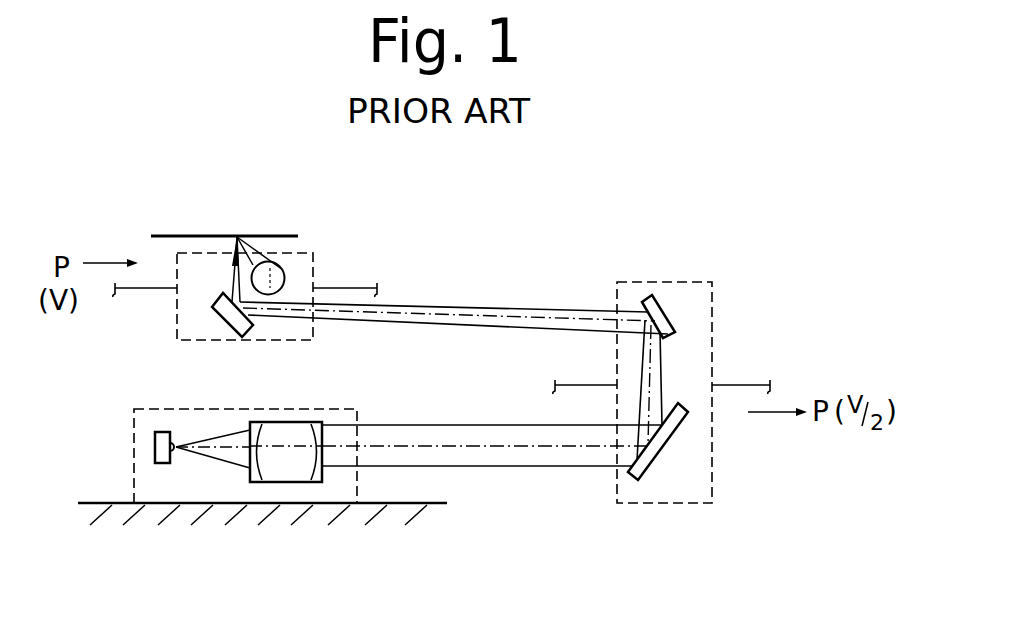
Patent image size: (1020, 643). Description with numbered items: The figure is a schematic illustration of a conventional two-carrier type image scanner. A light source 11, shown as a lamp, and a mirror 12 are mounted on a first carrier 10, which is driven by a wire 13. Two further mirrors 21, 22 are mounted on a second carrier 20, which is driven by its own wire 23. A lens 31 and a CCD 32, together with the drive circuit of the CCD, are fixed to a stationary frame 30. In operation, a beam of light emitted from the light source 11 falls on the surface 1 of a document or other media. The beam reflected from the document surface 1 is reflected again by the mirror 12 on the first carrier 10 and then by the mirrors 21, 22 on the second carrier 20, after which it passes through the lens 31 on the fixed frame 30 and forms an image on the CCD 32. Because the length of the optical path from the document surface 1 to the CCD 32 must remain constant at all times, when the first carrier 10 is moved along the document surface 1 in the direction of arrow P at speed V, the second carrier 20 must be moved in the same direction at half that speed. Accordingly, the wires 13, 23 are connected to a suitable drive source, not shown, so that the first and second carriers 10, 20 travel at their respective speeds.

The document surface 1 is at (175, 236).
The first carrier 10 is at (317, 268).
The light source 11 is at (283, 269).
The mirror 12 is at (210, 309).
The wire 13 is at (354, 287).
The second carrier 20 is at (716, 286).
The mirror 21 is at (658, 297).
The mirror 22 is at (650, 470).
The wire 23 is at (752, 384).
The stationary frame 30 is at (276, 508).
The lens 31 is at (290, 422).
The CCD 32 is at (160, 432).